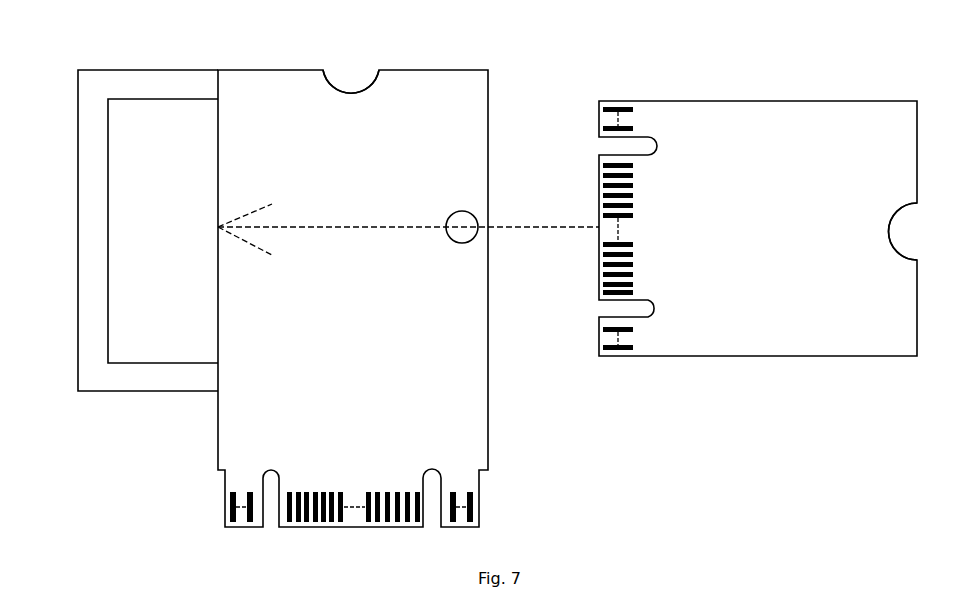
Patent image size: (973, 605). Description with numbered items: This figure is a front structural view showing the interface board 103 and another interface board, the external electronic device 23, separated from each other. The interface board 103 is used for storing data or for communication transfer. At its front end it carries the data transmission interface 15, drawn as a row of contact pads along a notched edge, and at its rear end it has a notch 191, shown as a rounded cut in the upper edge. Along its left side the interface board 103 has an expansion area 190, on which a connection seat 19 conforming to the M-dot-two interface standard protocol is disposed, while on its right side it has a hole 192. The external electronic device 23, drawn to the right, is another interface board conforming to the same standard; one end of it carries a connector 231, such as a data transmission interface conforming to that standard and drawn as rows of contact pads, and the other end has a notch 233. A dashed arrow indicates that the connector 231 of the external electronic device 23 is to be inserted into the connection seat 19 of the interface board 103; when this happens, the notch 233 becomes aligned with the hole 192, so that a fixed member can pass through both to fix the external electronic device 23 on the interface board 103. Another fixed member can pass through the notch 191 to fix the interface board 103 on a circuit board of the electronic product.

The expansion area 190 is at (128, 78).
The connection seat 19 is at (353, 231).
The notch 191 is at (354, 97).
The hole 192 is at (461, 220).
The interface board 103 is at (488, 422).
The data transmission interface 15 is at (228, 507).
The external electronic device 23 is at (903, 143).
The connector 231 is at (602, 103).
The notch 233 is at (892, 233).